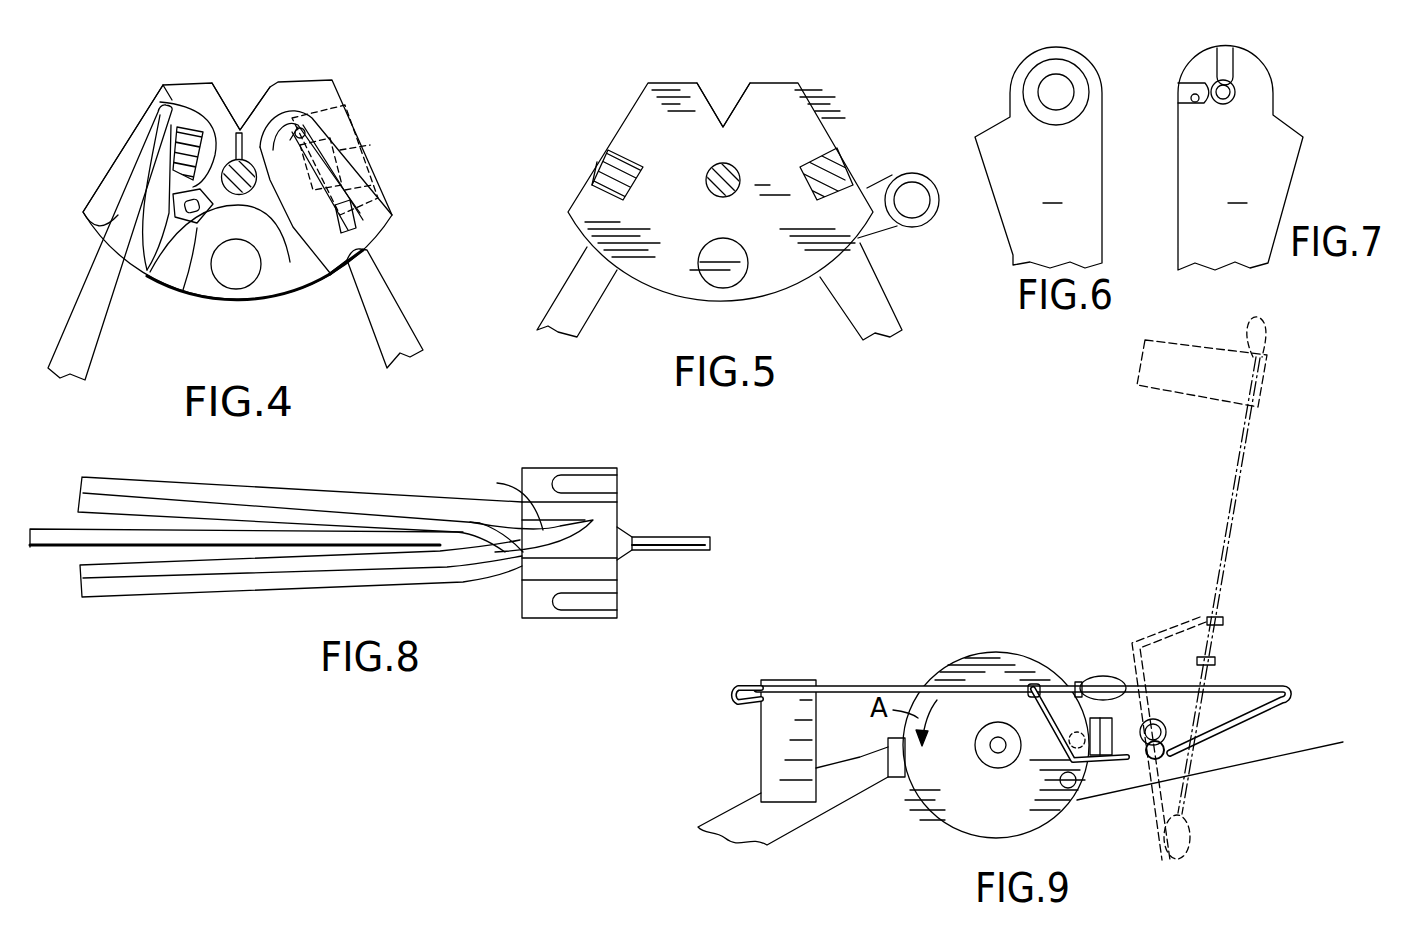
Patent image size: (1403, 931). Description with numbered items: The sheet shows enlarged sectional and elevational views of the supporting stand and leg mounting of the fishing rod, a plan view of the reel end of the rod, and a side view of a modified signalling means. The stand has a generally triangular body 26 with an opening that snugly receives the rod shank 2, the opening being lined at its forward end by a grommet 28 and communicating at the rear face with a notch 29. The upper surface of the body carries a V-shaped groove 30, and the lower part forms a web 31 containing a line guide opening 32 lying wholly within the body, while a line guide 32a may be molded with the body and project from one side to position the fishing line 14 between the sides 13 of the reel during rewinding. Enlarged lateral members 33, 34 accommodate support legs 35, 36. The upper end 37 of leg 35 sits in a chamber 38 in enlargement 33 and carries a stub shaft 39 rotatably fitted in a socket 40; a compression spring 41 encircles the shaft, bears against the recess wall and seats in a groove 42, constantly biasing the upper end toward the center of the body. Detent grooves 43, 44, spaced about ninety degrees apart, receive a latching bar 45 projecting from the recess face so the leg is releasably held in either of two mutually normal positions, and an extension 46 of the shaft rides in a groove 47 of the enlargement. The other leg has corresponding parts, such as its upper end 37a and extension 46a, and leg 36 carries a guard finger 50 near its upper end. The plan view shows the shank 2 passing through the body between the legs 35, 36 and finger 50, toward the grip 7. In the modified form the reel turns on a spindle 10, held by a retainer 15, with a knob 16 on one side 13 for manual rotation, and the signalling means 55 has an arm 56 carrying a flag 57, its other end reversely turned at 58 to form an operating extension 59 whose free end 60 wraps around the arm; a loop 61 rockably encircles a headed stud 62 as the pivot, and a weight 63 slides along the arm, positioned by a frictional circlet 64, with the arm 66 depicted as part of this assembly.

In FIG. 5, the shank 2 is at (737, 170).
In FIG. 8, the shank 2 is at (63, 550).
In FIG. 9, the grip 7 is at (800, 822).
In FIG. 9, the spindle 10 is at (993, 748).
In FIG. 9, the sides 13 is at (1050, 800).
In FIG. 9, the fishing line 14 is at (1327, 743).
In FIG. 9, the retainer 15 is at (993, 767).
In FIG. 9, the knob 16 is at (1075, 733).
In FIG. 4, the body 26 is at (298, 80).
In FIG. 5, the body 26 is at (807, 90).
In FIG. 8, the body 26 is at (520, 602).
In FIG. 5, the grommet 28 is at (717, 193).
In FIG. 4, the notch 29 is at (241, 128).
In FIG. 4, the V-shaped groove 30 is at (241, 127).
In FIG. 5, the V-shaped groove 30 is at (723, 113).
In FIG. 8, the V-shaped groove 30 is at (623, 527).
In FIG. 4, the web 31 is at (332, 277).
In FIG. 4, the line guide opening 32 is at (230, 277).
In FIG. 5, the line guide opening 32 is at (738, 287).
In FIG. 5, the line guide 32a is at (910, 230).
In FIG. 4, the lateral member 33 is at (357, 150).
In FIG. 4, the lateral member 34 is at (107, 183).
In FIG. 4, the support leg 35 is at (400, 310).
In FIG. 5, the support leg 35 is at (590, 300).
In FIG. 6, the support leg 35 is at (1038, 157).
In FIG. 7, the support leg 35 is at (1240, 158).
In FIG. 8, the support leg 35 is at (320, 578).
In FIG. 4, the support leg 36 is at (87, 303).
In FIG. 5, the support leg 36 is at (887, 293).
In FIG. 8, the support leg 36 is at (332, 512).
In FIG. 4, the upper end 37 is at (307, 107).
In FIG. 7, the upper end 37 is at (1250, 56).
In FIG. 4, the upper end 37a is at (163, 85).
In FIG. 4, the chamber 38 is at (297, 133).
In FIG. 4, the stub shaft 39 is at (370, 200).
In FIG. 5, the stub shaft 39 is at (607, 163).
In FIG. 6, the stub shaft 39 is at (1065, 90).
In FIG. 4, the socket 40 is at (363, 160).
In FIG. 4, the compression spring 41 is at (343, 217).
In FIG. 5, the compression spring 41 is at (603, 185).
In FIG. 4, the groove 42 is at (323, 113).
In FIG. 6, the groove 42 is at (1045, 70).
In FIG. 7, the detent groove 43 is at (1238, 88).
In FIG. 7, the detent groove 44 is at (1195, 102).
In FIG. 4, the latching bar 45 is at (260, 118).
In FIG. 4, the extension 46 is at (302, 275).
In FIG. 4, the extension 46a is at (190, 263).
In FIG. 4, the groove 47 is at (150, 252).
In FIG. 4, the guard finger 50 is at (157, 153).
In FIG. 8, the guard finger 50 is at (531, 504).
In FIG. 9, the signalling means 55 is at (1267, 611).
In FIG. 9, the arm 56 is at (877, 686).
In FIG. 9, the flag 57 is at (768, 733).
In FIG. 9, the reversely turned end 58 is at (1287, 690).
In FIG. 9, the operating extension 59 is at (1227, 733).
In FIG. 9, the free end 60 is at (1027, 697).
In FIG. 9, the loop 61 is at (1162, 713).
In FIG. 9, the headed stud 62 is at (1163, 753).
In FIG. 9, the weight 63 is at (1103, 677).
In FIG. 9, the circlet 64 is at (1077, 682).
In FIG. 9, the arm 66 is at (1250, 443).